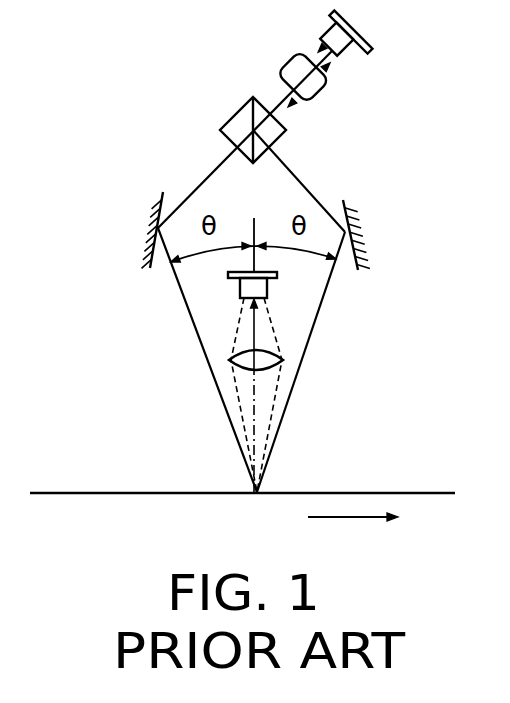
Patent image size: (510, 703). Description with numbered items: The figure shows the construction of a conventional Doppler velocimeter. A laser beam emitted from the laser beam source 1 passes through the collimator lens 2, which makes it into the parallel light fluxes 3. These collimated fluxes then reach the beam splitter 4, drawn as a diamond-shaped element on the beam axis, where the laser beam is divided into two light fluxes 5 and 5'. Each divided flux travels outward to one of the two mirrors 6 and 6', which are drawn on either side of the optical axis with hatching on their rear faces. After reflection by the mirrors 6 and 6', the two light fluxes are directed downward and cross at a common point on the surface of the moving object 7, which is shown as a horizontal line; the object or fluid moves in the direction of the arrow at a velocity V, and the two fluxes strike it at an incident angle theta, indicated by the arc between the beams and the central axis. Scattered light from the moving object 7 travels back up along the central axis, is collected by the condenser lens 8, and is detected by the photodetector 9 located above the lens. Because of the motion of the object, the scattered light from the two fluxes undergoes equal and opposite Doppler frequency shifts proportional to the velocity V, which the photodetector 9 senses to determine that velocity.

The laser beam source 1 is at (330, 32).
The collimator lens 2 is at (287, 63).
The parallel light fluxes 3 is at (270, 90).
The beam splitter 4 is at (228, 120).
The light flux 5 is at (243, 139).
The light flux 5' is at (303, 179).
The mirror 6 is at (135, 220).
The mirror 6' is at (374, 219).
The moving object 7 is at (343, 493).
The condenser lens 8 is at (266, 352).
The photodetector 9 is at (268, 290).